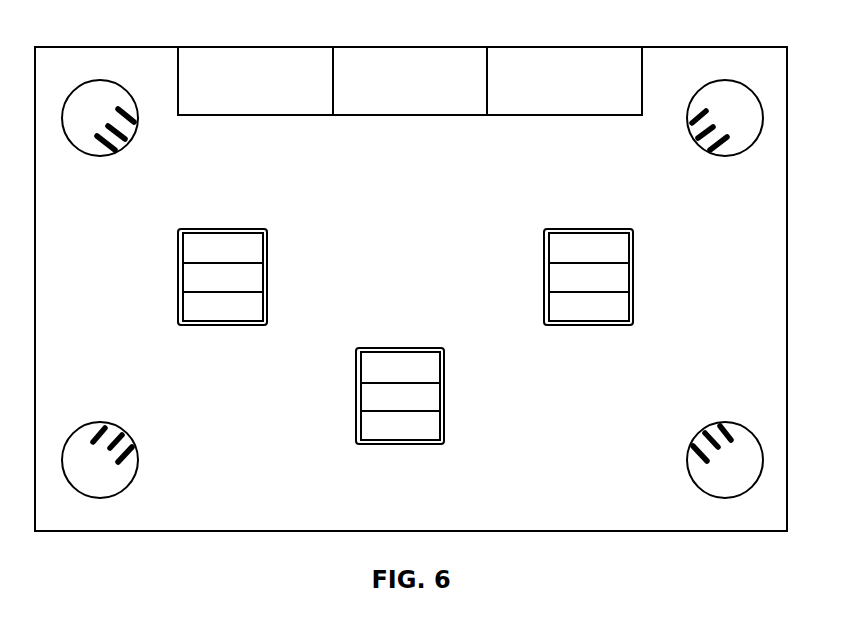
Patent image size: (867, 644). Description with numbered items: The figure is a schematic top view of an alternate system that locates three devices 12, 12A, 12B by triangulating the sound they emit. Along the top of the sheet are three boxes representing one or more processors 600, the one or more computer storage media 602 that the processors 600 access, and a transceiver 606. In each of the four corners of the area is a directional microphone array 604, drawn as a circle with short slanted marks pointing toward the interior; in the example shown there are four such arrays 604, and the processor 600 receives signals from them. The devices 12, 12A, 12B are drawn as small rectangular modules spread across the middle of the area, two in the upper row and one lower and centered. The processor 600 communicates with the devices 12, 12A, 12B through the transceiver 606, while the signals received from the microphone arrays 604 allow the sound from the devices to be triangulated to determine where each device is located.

The processor 600 is at (287, 52).
The computer storage media 602 is at (442, 53).
The transceiver 606 is at (595, 53).
The directional microphone array 604 is at (123, 87).
The device 12 is at (267, 258).
The device 12A is at (444, 372).
The device 12B is at (633, 253).